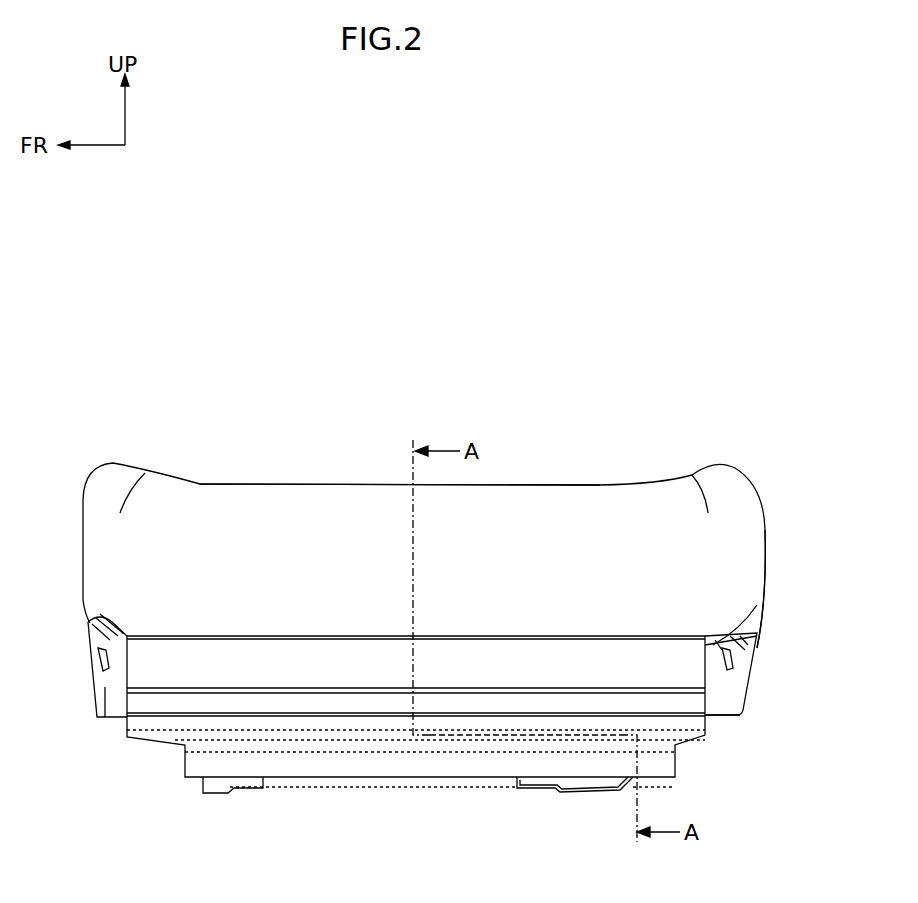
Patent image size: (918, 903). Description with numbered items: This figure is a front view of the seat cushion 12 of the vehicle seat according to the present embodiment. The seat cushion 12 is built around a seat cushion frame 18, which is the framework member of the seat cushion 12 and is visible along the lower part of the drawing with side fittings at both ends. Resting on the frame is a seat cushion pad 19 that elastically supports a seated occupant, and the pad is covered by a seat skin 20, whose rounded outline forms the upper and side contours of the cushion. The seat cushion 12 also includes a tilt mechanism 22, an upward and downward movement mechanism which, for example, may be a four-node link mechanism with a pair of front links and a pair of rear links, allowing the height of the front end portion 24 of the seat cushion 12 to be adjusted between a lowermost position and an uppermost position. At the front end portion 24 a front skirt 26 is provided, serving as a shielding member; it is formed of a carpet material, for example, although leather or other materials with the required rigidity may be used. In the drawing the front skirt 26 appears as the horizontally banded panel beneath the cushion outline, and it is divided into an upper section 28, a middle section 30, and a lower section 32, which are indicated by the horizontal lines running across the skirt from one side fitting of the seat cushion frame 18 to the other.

The seat cushion 12 is at (755, 463).
The seat cushion frame 18 is at (748, 693).
The seat cushion pad 19 is at (752, 535).
The seat skin 20 is at (753, 585).
The tilt mechanism 22 is at (725, 720).
The front end portion 24 is at (278, 520).
The front skirt 26 is at (465, 636).
The upper section 28 is at (193, 637).
The middle section 30 is at (268, 657).
The lower section 32 is at (330, 767).